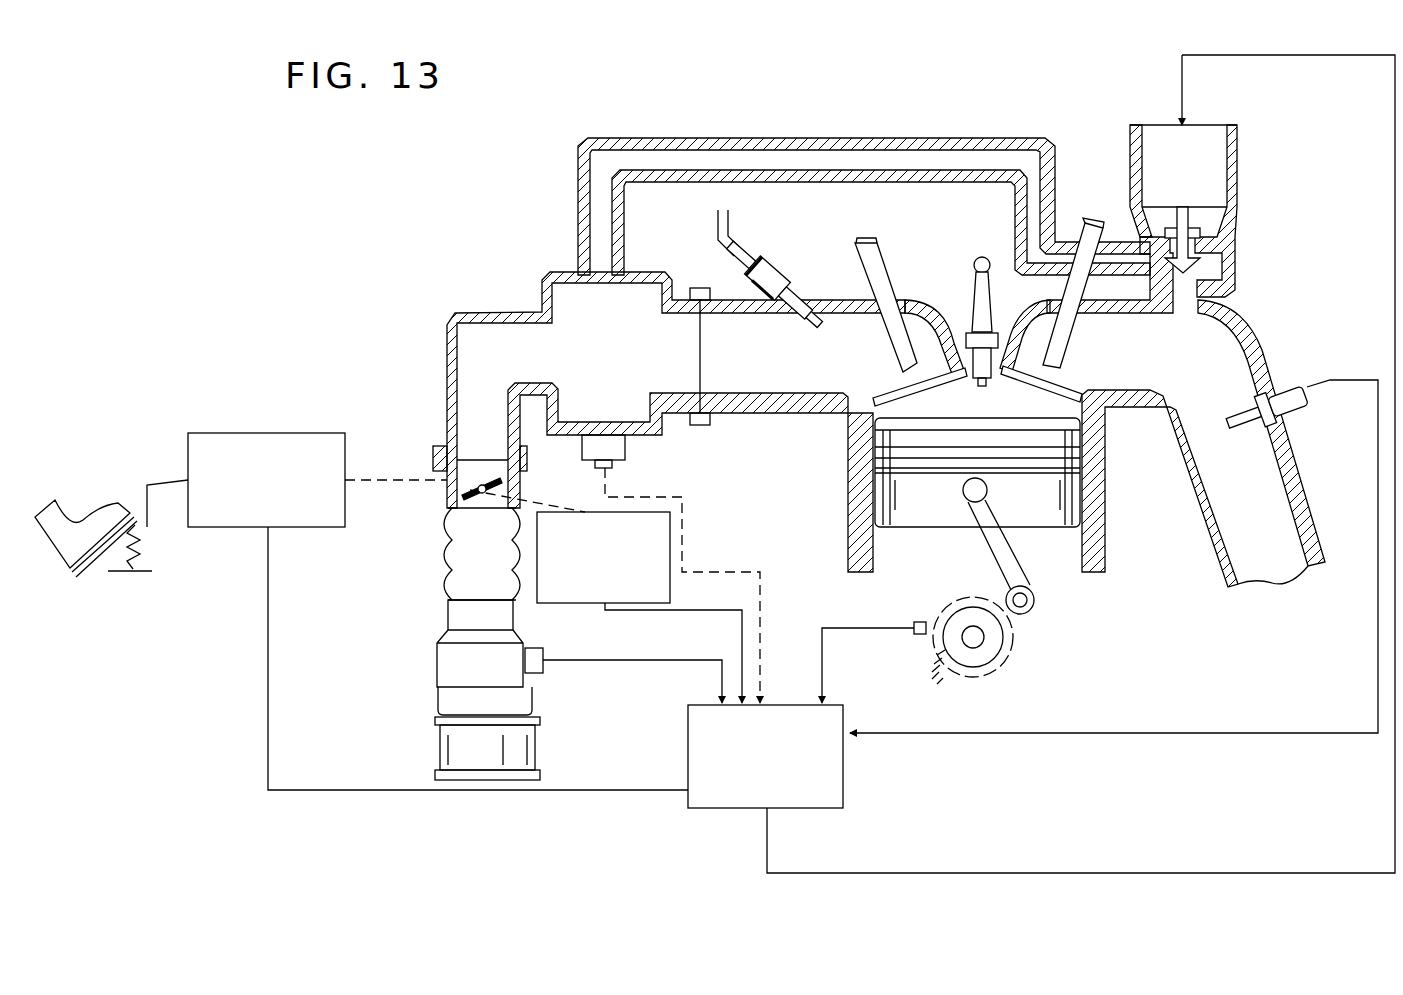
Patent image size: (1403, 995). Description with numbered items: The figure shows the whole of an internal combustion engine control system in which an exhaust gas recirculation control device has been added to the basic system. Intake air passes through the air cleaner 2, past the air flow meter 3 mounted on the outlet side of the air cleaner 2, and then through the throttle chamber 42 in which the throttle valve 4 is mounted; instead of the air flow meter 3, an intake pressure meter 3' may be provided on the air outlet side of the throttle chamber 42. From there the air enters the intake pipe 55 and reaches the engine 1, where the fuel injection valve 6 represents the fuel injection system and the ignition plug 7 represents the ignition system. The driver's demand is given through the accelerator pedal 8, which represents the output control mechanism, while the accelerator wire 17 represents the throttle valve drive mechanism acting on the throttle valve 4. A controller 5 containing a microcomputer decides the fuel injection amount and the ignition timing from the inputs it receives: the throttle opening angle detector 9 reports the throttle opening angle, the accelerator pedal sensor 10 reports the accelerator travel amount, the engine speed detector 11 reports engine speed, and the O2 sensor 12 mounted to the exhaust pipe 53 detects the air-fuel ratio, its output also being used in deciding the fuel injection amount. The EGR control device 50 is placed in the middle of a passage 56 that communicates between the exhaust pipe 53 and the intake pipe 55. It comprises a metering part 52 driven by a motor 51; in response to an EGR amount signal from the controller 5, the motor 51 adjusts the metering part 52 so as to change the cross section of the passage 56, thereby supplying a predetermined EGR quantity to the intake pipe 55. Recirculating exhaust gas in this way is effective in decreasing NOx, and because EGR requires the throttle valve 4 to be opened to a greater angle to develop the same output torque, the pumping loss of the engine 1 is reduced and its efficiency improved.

The engine 1 is at (1097, 585).
The air cleaner 2 is at (541, 748).
The air flow meter 3 is at (579, 657).
The intake pressure meter 3' is at (671, 569).
The throttle valve 4 is at (452, 497).
The controller 5 is at (845, 780).
The fuel injection valve 6 is at (783, 273).
The ignition plug 7 is at (975, 320).
The accelerator pedal 8 is at (137, 540).
The throttle opening angle detector 9 is at (672, 595).
The accelerator pedal sensor 10 is at (315, 527).
The engine speed detector 11 is at (1000, 663).
The O2 sensor 12 is at (1293, 392).
The accelerator wire 17 is at (163, 480).
The throttle chamber 42 is at (522, 485).
The EGR control device 50 is at (1081, 464).
The motor 51 is at (1207, 157).
The metering part 52 is at (1193, 270).
The exhaust pipe 53 is at (1207, 337).
The intake pipe 55 is at (572, 292).
The passage 56 is at (900, 150).